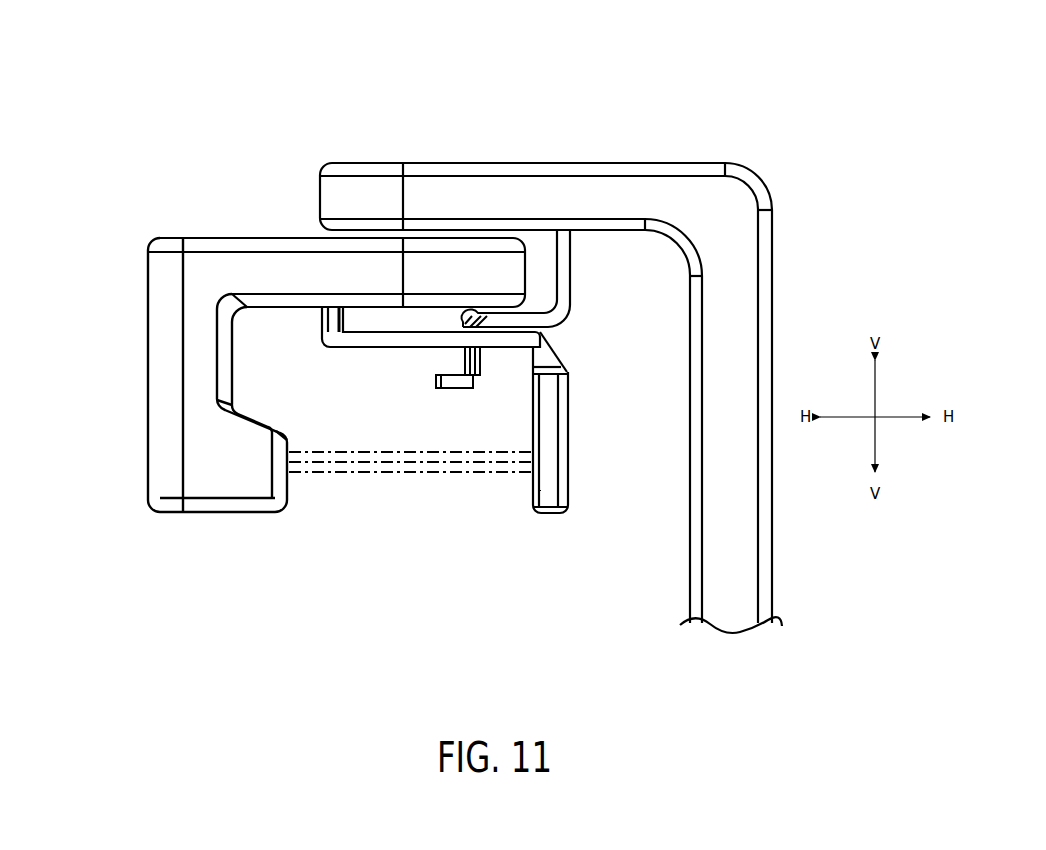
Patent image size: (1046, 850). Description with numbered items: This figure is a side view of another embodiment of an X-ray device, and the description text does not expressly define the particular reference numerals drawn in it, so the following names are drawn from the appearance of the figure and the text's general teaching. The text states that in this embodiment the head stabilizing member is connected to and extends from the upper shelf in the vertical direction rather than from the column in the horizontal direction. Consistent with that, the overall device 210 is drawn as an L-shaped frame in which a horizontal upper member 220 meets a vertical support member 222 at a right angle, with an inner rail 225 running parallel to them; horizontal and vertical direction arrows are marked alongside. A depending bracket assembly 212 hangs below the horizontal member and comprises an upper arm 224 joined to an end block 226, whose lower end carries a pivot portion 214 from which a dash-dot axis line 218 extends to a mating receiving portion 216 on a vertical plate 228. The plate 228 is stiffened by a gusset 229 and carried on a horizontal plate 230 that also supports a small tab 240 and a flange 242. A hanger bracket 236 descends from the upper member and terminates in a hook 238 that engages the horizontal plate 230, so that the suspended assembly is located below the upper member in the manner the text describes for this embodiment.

The drawer assembly / frame 210 is at (587, 333).
The bracket assembly 212 is at (298, 333).
The pivot pin 214 is at (287, 468).
The pivot receiving portion 216 is at (535, 488).
The pivot axis 218 is at (405, 476).
The upper rail 220 is at (490, 168).
The vertical frame member 222 is at (760, 505).
The upper arm of bracket 224 is at (248, 244).
The inner rail 225 is at (592, 282).
The end block of bracket 226 is at (155, 403).
The vertical plate 228 is at (560, 433).
The gusset 229 is at (545, 357).
The horizontal plate 230 is at (340, 338).
The hanger bracket 236 is at (563, 257).
The hook 238 is at (537, 320).
The tab 240 is at (478, 357).
The flange 242 is at (452, 398).